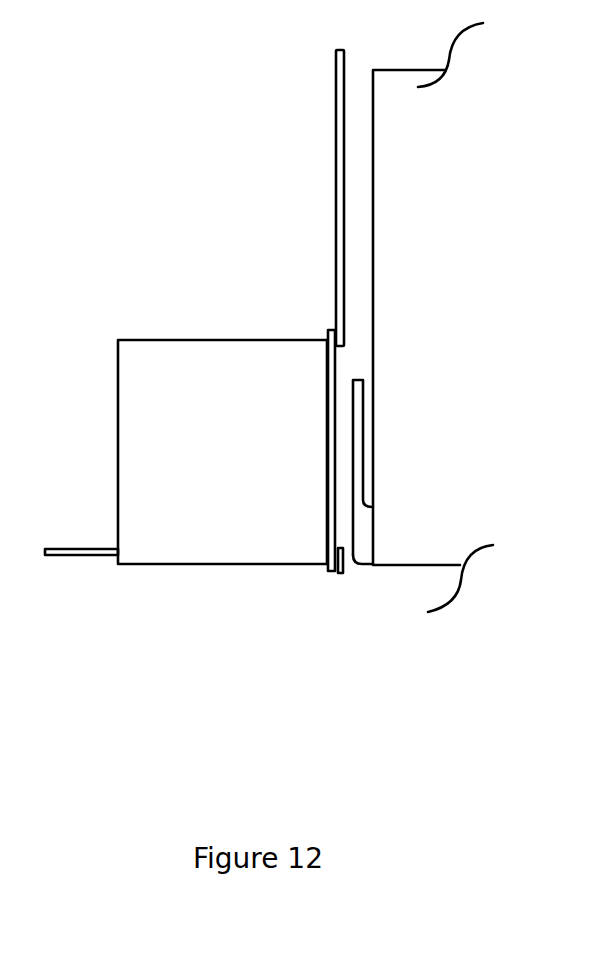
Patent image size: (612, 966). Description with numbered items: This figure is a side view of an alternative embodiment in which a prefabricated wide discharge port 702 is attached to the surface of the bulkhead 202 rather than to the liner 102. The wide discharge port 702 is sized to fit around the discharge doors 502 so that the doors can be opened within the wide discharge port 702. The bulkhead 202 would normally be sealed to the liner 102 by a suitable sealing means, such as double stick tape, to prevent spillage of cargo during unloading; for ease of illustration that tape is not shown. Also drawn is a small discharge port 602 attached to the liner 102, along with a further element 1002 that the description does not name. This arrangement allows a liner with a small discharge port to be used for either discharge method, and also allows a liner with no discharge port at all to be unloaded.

The liner 102 is at (373, 258).
The bulkhead 202 is at (336, 212).
The thin plate 1002 is at (328, 331).
The wide discharge port 702 is at (122, 427).
The discharge doors 502 is at (58, 558).
The small discharge port 602 is at (360, 478).